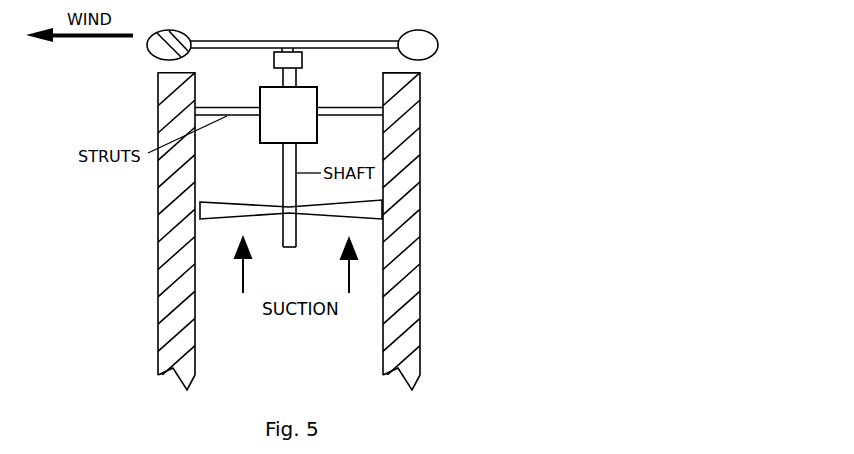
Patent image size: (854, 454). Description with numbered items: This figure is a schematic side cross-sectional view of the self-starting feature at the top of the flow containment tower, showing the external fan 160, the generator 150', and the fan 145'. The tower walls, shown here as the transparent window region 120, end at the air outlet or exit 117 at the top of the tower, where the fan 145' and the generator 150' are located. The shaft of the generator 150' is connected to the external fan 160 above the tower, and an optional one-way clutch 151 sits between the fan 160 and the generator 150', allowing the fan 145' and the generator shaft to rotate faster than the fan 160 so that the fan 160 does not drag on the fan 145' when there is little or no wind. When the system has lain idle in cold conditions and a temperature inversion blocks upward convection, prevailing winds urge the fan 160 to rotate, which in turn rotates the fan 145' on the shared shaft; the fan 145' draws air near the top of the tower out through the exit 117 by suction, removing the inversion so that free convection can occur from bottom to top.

The air outlet 117 is at (383, 72).
The window or transparent region 120 is at (421, 293).
The fan 145' is at (335, 193).
The generator 150' is at (374, 122).
The one-way clutch 151 is at (274, 63).
The external fan 160 is at (438, 45).